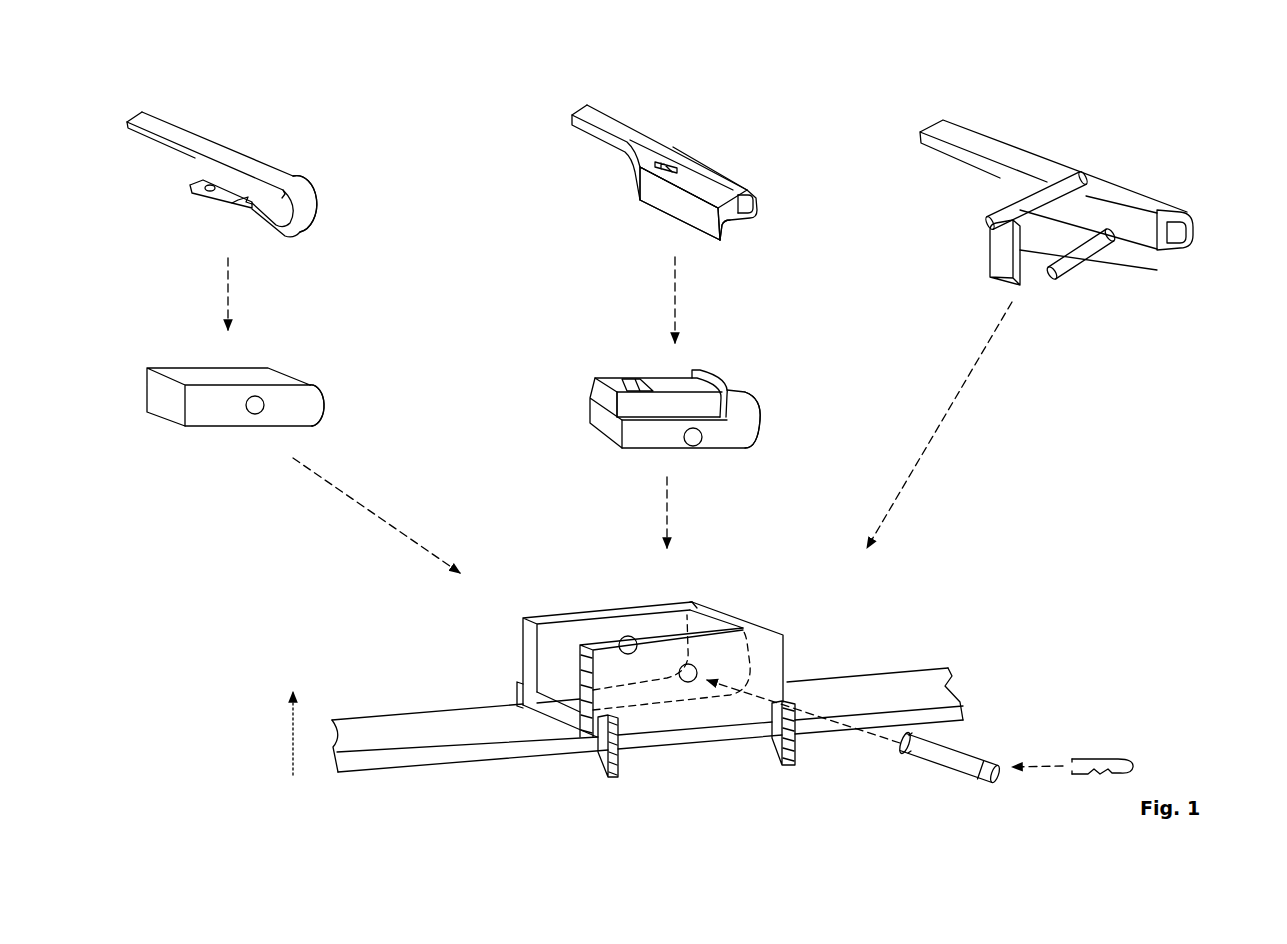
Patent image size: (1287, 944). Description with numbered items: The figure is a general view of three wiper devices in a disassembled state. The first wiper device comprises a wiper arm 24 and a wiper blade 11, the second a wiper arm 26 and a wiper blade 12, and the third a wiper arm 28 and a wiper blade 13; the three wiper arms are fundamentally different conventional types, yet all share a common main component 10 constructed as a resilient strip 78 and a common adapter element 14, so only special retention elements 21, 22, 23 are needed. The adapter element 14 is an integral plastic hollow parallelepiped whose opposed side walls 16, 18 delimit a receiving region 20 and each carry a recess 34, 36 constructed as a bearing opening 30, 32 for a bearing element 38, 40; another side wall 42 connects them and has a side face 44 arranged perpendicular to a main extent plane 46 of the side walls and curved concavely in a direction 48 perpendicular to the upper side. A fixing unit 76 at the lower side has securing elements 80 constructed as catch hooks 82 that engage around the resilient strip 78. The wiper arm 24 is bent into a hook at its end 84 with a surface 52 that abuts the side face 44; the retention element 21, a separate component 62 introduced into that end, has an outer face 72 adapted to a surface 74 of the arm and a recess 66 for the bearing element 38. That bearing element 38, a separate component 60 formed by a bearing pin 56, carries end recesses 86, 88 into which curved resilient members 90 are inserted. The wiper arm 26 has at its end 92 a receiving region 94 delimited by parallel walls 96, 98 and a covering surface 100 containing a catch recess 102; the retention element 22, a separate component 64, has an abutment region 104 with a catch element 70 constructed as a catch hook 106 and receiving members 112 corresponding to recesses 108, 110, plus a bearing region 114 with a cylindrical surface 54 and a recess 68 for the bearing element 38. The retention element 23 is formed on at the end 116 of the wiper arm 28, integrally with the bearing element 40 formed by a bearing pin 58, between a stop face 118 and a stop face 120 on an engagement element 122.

The main component 10 is at (647, 742).
The wiper blade 11 is at (284, 617).
The wiper blade 12 is at (284, 617).
The wiper blade 13 is at (353, 627).
The adapter element 14 is at (672, 691).
The side wall 16 is at (566, 630).
The side wall 18 is at (777, 667).
The receiving region 20 is at (563, 675).
The retention element 21 is at (262, 413).
The retention element 22 is at (710, 408).
The retention element 23 is at (1108, 275).
The wiper arm 24 is at (180, 133).
The wiper arm 26 is at (702, 195).
The wiper arm 28 is at (1071, 221).
The bearing opening 30 is at (640, 609).
The bearing opening 32 is at (711, 731).
The recess 34 is at (630, 637).
The recess 36 is at (690, 682).
The bearing element 38 is at (909, 769).
The bearing element 40 is at (1108, 275).
The other side wall 42 is at (746, 627).
The side face 44 is at (697, 610).
The main extent plane 46 is at (547, 648).
The direction 48 is at (293, 742).
The surface 52 is at (304, 222).
The surface 54 is at (762, 422).
The bearing pin 56 is at (909, 769).
The bearing pin 58 is at (1073, 267).
The separate component 60 is at (909, 769).
The separate component 62 is at (262, 413).
The separate component 64 is at (710, 408).
The recess 66 is at (258, 412).
The recess 68 is at (693, 446).
The catch element 70 is at (618, 352).
The outer face 72 is at (322, 390).
The surface 74 is at (240, 207).
The fixing unit 76 is at (597, 770).
The resilient strip 78 is at (433, 728).
The securing element 80 is at (799, 760).
The catch hook 82 is at (782, 766).
The end 84 is at (308, 156).
The recess 86 is at (896, 742).
The recess 88 is at (975, 775).
The curved resilient member 90 is at (1105, 757).
The end 92 is at (752, 178).
The receiving region 94 is at (742, 228).
The wall 96 is at (745, 218).
The wall 98 is at (703, 218).
The covering surface 100 is at (693, 187).
The catch recess 102 is at (673, 162).
The abutment region 104 is at (640, 407).
The catch hook 106 is at (632, 377).
The recess 108 is at (753, 205).
The recess 110 is at (723, 228).
The receiving member 112 is at (722, 387).
The bearing region 114 is at (780, 395).
The end 116 is at (1192, 212).
The stop face 118 is at (1137, 257).
The stop face 120 is at (1027, 267).
The engagement element 122 is at (1028, 212).